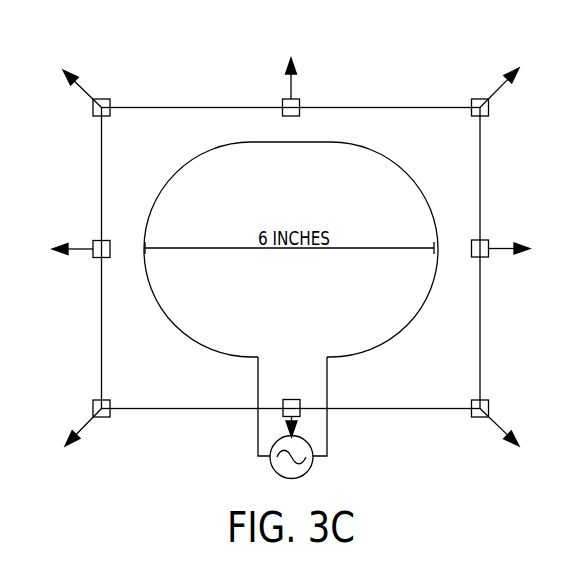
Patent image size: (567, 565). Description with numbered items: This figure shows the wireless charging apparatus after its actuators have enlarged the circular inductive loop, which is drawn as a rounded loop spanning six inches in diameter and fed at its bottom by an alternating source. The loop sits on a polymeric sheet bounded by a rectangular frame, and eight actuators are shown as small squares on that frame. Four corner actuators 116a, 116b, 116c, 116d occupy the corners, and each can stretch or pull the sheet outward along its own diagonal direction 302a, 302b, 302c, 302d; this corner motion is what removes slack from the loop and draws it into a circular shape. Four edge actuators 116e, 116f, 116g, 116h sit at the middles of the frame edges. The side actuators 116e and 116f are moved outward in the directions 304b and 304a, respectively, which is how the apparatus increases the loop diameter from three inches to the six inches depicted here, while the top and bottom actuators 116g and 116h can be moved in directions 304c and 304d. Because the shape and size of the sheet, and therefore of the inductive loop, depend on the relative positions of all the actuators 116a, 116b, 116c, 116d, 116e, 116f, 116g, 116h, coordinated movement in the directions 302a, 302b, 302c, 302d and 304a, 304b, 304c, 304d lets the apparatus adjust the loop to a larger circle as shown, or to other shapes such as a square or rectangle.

The actuator 116a is at (490, 410).
The actuator 116b is at (490, 110).
The actuator 116c is at (93, 110).
The actuator 116d is at (93, 410).
The actuator 116e is at (97, 259).
The actuator 116f is at (485, 258).
The actuator 116g is at (300, 102).
The actuator 116h is at (300, 412).
The direction 302a is at (491, 425).
The direction 302b is at (492, 96).
The direction 302c is at (89, 96).
The direction 302d is at (88, 425).
The direction 304a is at (500, 243).
The direction 304b is at (83, 245).
The direction 304c is at (290, 83).
The direction 304d is at (290, 427).